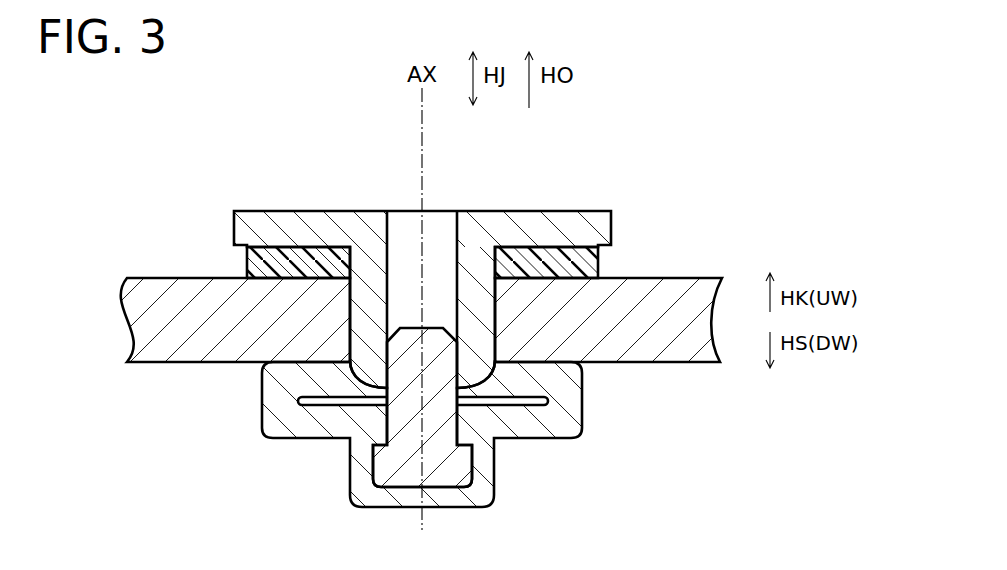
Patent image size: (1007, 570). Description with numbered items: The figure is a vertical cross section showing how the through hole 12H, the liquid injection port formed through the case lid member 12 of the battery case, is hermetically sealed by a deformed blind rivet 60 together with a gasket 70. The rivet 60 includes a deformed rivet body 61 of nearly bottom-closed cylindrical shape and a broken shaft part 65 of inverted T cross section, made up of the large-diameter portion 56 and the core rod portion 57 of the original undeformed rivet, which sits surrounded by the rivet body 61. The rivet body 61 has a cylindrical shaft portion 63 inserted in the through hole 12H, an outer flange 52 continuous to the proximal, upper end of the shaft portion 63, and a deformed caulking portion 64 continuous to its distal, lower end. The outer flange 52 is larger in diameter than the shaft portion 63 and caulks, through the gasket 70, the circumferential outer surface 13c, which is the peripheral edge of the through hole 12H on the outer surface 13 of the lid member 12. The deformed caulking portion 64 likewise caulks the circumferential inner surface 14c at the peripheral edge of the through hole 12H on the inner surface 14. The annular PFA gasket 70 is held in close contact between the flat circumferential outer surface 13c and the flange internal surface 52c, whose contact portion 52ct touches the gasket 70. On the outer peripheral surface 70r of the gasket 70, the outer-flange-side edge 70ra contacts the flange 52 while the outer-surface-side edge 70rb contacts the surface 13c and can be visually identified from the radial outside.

The case lid member 12 is at (722, 278).
The through hole 12H is at (340, 377).
The outer surface 13 is at (658, 278).
The circumferential outer surface 13c is at (560, 272).
The inner surface 14 is at (632, 363).
The circumferential inner surface 14c is at (548, 373).
The outer flange 52 is at (248, 215).
The flange internal surface 52c is at (613, 247).
The contact portion 52ct is at (540, 247).
The large-diameter portion 56 is at (462, 465).
The core rod portion 57 is at (388, 420).
The deformed blind rivet 60 is at (419, 319).
The deformed rivet body 61 is at (533, 222).
The shaft portion 63 is at (368, 297).
The deformed caulking portion 64 is at (540, 428).
The broken shaft part 65 is at (440, 328).
The gasket 70 is at (303, 252).
The outer peripheral surface 70r is at (245, 262).
The outer-flange-side edge 70ra is at (238, 247).
The outer-surface-side edge 70rb is at (246, 277).